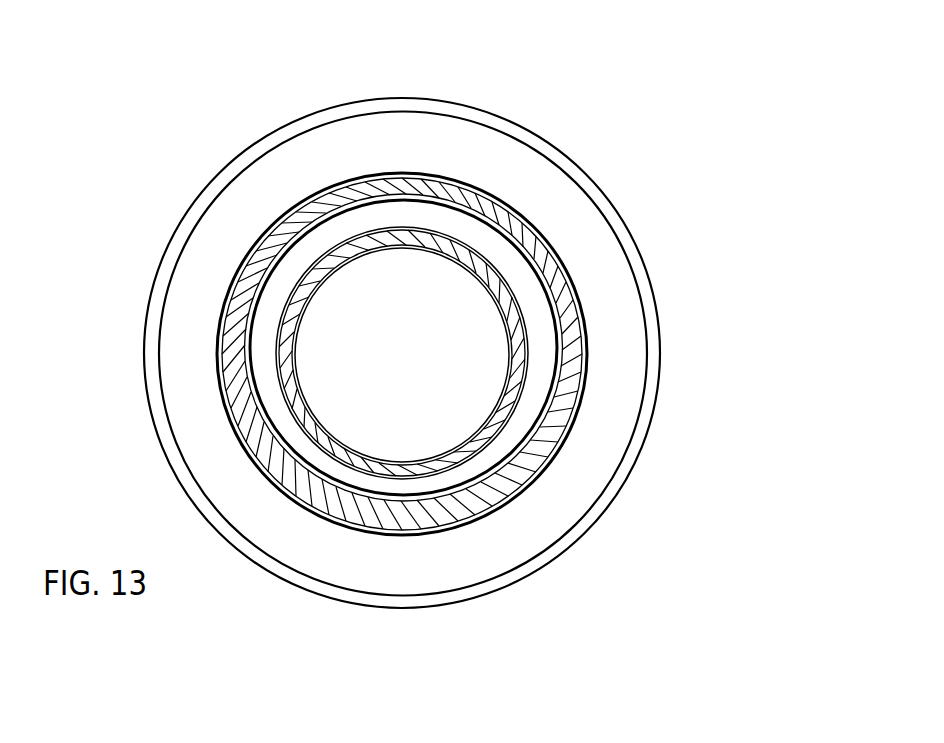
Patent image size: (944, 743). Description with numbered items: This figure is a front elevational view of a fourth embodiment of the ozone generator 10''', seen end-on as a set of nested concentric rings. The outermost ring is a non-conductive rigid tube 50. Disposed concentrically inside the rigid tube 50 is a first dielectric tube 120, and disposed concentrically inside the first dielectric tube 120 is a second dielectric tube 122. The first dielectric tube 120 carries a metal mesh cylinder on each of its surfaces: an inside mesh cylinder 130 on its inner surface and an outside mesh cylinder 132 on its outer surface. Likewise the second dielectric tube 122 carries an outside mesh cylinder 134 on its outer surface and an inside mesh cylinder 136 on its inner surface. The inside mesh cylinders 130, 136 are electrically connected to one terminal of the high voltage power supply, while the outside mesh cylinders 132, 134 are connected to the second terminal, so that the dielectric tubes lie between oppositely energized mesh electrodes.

The ozone generator 10''' is at (700, 67).
The non-conductive rigid tube 50 is at (206, 191).
The first dielectric tube 120 is at (433, 187).
The second dielectric tube 122 is at (518, 353).
The metal mesh cylinder 130 is at (373, 198).
The metal mesh cylinder 132 is at (362, 178).
The metal mesh cylinder 134 is at (490, 273).
The metal mesh cylinder 136 is at (500, 300).